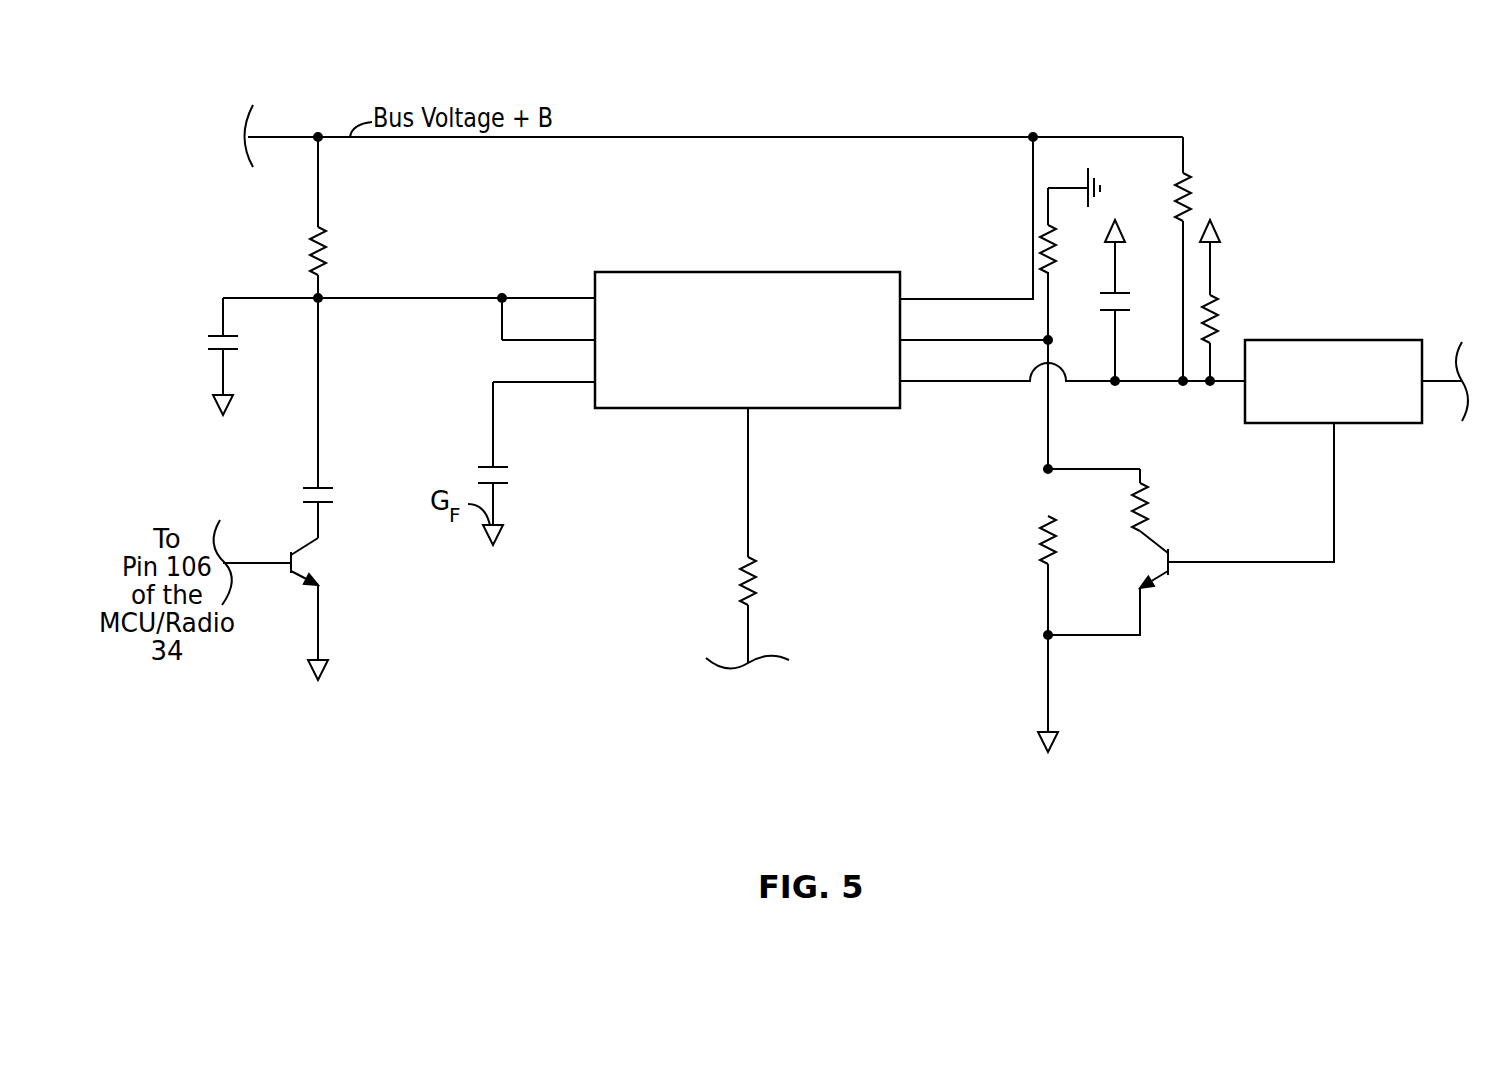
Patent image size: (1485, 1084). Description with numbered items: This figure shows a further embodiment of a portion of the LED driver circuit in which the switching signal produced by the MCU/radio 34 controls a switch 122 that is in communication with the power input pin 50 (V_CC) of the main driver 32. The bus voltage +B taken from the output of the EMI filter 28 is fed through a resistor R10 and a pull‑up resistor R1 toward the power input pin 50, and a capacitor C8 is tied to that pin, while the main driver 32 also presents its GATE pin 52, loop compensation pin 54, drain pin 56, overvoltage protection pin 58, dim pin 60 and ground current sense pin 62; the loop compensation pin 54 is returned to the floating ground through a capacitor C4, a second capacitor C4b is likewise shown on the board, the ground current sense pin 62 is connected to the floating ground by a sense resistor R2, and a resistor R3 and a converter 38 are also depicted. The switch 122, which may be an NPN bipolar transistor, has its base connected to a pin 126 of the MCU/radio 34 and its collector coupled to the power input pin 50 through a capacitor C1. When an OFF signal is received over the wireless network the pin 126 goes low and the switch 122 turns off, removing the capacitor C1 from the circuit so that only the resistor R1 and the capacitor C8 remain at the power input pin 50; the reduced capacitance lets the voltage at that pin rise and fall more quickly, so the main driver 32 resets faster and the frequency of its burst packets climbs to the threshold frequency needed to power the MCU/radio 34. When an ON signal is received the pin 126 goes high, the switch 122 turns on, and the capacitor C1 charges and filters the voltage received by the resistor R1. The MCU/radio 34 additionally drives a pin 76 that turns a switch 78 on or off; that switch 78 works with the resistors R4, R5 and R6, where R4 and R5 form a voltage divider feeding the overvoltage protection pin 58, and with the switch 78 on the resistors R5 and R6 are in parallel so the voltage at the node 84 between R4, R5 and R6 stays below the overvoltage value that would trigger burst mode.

The EMI filter 28 is at (190, 145).
The main driver 32 is at (640, 270).
The MCU/radio 34 is at (1289, 338).
The converter 38 is at (748, 712).
The power input pin 50 is at (485, 296).
The GATE pin 52 is at (518, 343).
The loop compensation pin 54 is at (587, 385).
The drain pin 56 is at (983, 297).
The overvoltage protection pin 58 is at (942, 342).
The dim pin 60 is at (918, 383).
The ground current sense pin 62 is at (747, 443).
The pin 76 is at (1336, 548).
The switch 78 is at (1163, 538).
The node 84 is at (1046, 466).
The switch 122 is at (296, 585).
The pin 126 is at (1454, 404).
The resistor R1 is at (320, 230).
The sense resistor R2 is at (750, 560).
The resistor R3 is at (1212, 296).
The resistor R4 is at (1050, 265).
The resistor R5 is at (1050, 528).
The resistor R6 is at (1143, 486).
The resistor R10 is at (1185, 182).
The capacitor C1 is at (332, 488).
The capacitor C4 is at (498, 466).
The capacitor C4 (second) C4b is at (1118, 300).
The capacitor C8 is at (218, 333).